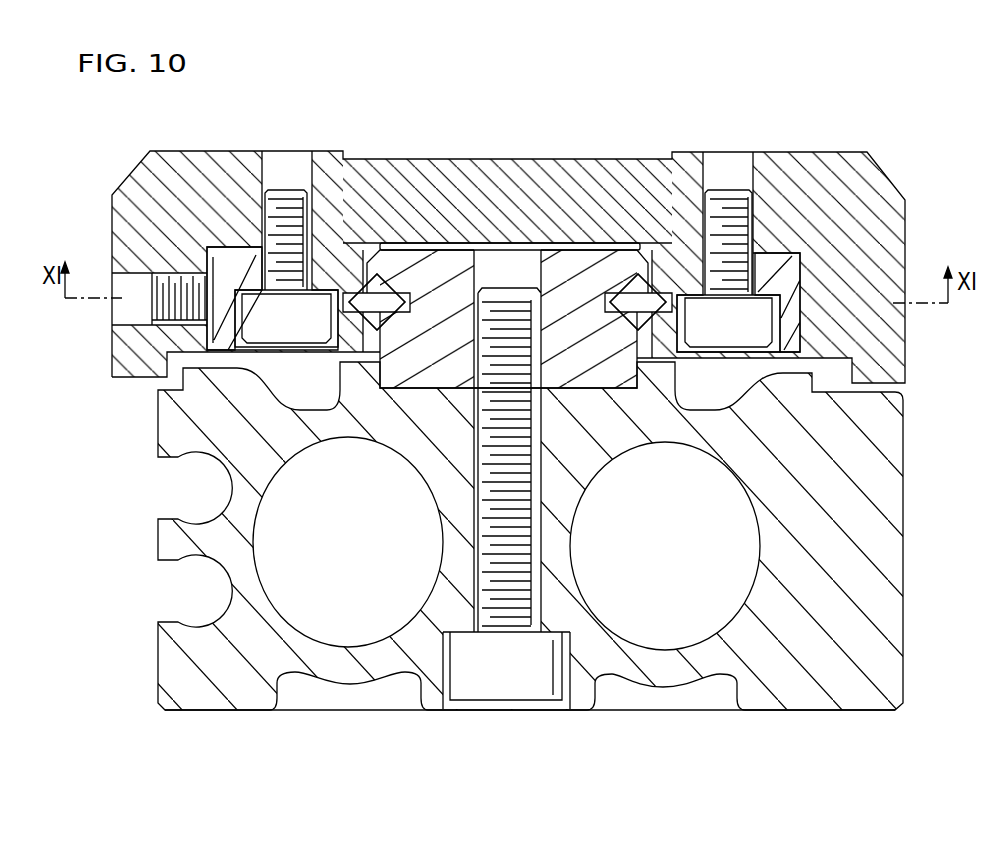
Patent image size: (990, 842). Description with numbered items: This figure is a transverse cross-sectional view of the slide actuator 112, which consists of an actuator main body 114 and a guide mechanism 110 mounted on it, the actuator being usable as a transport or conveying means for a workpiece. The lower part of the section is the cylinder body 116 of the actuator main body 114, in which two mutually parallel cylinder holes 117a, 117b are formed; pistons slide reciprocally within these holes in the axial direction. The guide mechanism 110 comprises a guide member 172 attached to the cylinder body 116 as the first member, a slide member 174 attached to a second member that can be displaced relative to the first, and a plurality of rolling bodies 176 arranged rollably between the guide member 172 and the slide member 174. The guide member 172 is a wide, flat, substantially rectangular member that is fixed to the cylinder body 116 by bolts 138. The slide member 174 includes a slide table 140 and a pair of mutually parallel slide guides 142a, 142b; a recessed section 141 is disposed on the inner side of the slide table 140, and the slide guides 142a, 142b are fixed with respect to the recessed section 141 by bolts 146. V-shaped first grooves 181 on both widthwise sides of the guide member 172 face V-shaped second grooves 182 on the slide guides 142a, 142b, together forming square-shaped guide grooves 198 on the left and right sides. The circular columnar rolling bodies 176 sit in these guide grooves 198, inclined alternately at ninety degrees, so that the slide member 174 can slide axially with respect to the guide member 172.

The guide mechanism 110 is at (848, 152).
The slide actuator 112 is at (130, 117).
The actuator main body 114 is at (822, 711).
The cylinder body 116 is at (253, 693).
The cylinder hole 117a is at (373, 646).
The cylinder hole 117b is at (641, 648).
The bolt 138 is at (521, 692).
The slide table 140 is at (883, 190).
The recessed section 141 is at (443, 255).
The slide guide 142a is at (238, 262).
The slide guide 142b is at (778, 263).
The bolt 146 is at (275, 195).
The guide member 172 is at (566, 247).
The slide member 174 is at (523, 159).
The rolling body 176 is at (385, 312).
The first groove 181 is at (384, 304).
The second groove 182 is at (369, 292).
The guide groove 198 is at (507, 201).